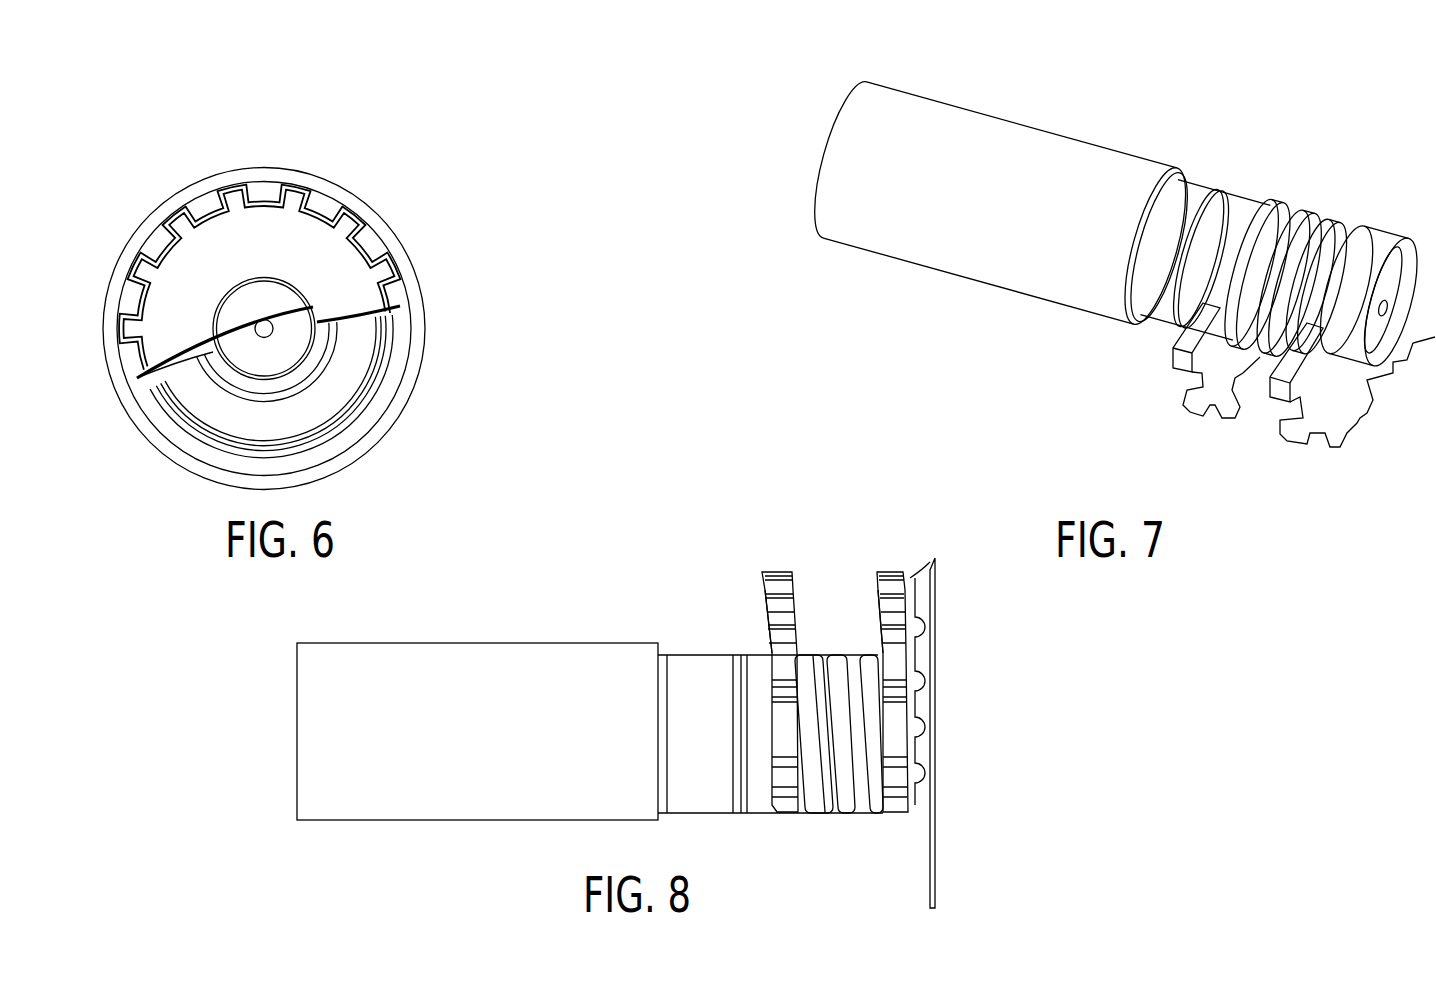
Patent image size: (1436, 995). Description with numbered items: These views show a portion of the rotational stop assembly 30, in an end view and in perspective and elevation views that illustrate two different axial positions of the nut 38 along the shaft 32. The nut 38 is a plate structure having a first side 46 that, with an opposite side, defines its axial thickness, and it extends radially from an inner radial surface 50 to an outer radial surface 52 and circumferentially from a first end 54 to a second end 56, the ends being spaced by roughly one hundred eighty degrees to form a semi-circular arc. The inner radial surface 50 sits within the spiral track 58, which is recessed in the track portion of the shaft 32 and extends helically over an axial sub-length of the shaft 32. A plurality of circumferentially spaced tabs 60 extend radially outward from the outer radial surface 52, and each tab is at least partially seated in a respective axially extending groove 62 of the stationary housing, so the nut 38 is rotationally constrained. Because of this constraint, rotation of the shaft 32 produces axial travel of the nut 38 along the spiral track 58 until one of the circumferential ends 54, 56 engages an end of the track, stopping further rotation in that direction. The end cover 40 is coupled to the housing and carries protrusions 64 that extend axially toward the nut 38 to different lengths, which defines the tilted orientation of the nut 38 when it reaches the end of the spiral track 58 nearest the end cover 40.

In FIG. 6, the rotational stop assembly 30 is at (150, 197).
In FIG. 6, the shaft 32 is at (287, 352).
In FIG. 7, the shaft 32 is at (1027, 98).
In FIG. 8, the shaft 32 is at (537, 628).
In FIG. 6, the nut 38 is at (302, 263).
In FIG. 7, the nut 38 is at (1315, 455).
In FIG. 8, the nut 38 is at (748, 583).
In FIG. 6, the end cover 40 is at (228, 185).
In FIG. 8, the end cover 40 is at (935, 648).
In FIG. 6, the first side 46 is at (256, 257).
In FIG. 6, the inner radial surface 50 is at (137, 378).
In FIG. 6, the outer radial surface 52 is at (377, 263).
In FIG. 6, the first end 54 is at (172, 364).
In FIG. 6, the second end 56 is at (318, 322).
In FIG. 7, the spiral track 58 is at (1343, 218).
In FIG. 8, the spiral track 58 is at (815, 655).
In FIG. 6, the tabs 60 is at (355, 242).
In FIG. 7, the tabs 60 is at (1230, 423).
In FIG. 8, the tabs 60 is at (895, 618).
In FIG. 6, the grooves 62 is at (293, 180).
In FIG. 8, the protrusions 64 is at (932, 562).